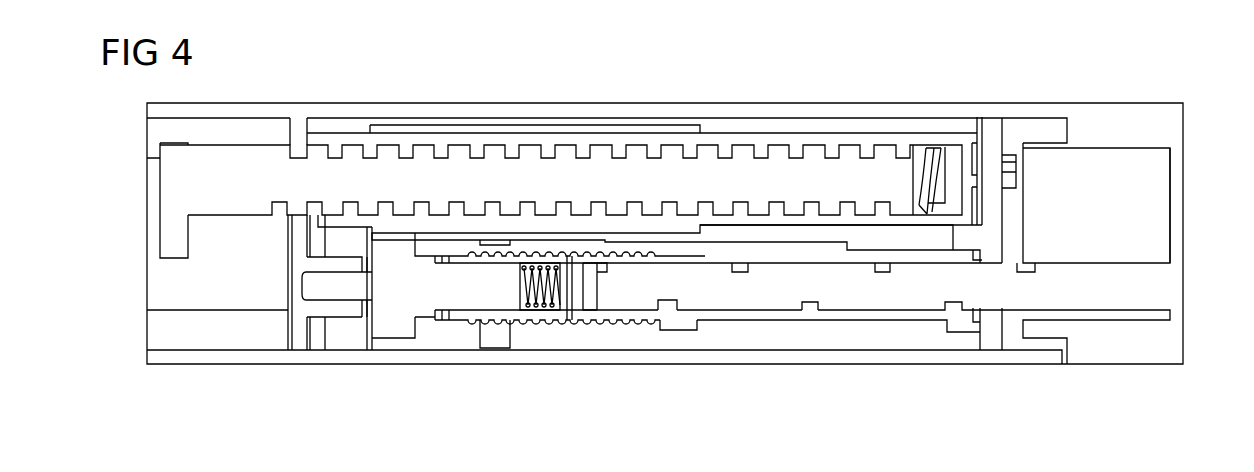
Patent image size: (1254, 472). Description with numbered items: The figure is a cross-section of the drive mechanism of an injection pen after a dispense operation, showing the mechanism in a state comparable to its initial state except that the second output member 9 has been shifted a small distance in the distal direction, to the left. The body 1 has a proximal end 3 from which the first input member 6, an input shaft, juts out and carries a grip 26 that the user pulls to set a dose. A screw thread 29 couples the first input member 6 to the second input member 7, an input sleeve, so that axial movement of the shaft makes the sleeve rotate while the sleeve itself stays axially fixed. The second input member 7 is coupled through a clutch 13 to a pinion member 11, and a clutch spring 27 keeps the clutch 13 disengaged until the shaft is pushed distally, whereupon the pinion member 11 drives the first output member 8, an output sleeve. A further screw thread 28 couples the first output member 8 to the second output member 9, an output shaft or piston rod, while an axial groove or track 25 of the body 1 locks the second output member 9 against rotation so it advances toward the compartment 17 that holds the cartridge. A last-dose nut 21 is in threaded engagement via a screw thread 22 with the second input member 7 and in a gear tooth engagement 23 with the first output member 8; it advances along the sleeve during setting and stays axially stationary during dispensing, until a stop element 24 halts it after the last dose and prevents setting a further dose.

The body 1 is at (1020, 103).
The proximal end 3 is at (1183, 240).
The first input member 6 is at (882, 298).
The second input member 7 is at (722, 322).
The first output member 8 is at (676, 135).
The second output member 9 is at (884, 178).
The pinion member 11 is at (390, 330).
The clutch 13 is at (444, 322).
The compartment 17 is at (160, 237).
The last-dose nut 21 is at (483, 345).
The screw thread 22 is at (566, 258).
The gear tooth engagement 23 is at (483, 242).
The stop element 24 is at (667, 332).
The axial groove or track 25 is at (298, 147).
The grip 26 is at (1130, 125).
The clutch spring 27 is at (520, 288).
The further screw thread 28 is at (787, 148).
The screw thread 29 is at (795, 310).